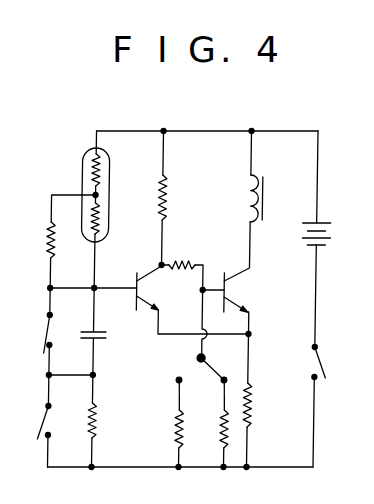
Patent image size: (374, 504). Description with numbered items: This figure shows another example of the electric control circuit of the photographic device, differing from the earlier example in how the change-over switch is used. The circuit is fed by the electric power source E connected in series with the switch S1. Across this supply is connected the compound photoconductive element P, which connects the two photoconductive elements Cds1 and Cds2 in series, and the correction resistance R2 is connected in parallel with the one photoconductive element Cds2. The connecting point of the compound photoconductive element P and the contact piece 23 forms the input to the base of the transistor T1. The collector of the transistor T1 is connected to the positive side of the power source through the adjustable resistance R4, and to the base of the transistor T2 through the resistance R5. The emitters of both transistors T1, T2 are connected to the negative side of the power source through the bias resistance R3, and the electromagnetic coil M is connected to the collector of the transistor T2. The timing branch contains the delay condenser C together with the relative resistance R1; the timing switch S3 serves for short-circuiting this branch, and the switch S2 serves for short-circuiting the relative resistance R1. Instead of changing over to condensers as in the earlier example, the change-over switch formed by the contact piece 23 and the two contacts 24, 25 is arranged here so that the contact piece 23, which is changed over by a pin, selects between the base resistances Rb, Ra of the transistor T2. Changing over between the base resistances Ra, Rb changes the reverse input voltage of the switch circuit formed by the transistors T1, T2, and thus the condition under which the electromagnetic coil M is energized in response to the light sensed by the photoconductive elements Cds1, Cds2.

The photoconductive element Cds1 is at (92, 157).
The photoconductive element Cds2 is at (91, 228).
The compound photoconductive element P is at (113, 154).
The relative resistance R1 is at (106, 421).
The correction resistance R2 is at (59, 243).
The bias resistance R3 is at (262, 400).
The adjustable resistance R4 is at (177, 199).
The resistance R5 is at (184, 298).
The base resistance Ra is at (209, 423).
The base resistance Rb is at (163, 423).
The delay condenser C is at (95, 333).
The transistor T1 is at (193, 300).
The transistor T2 is at (236, 279).
The switch S1 is at (331, 406).
The switch S2 is at (31, 421).
The timing switch S3 is at (34, 333).
The electromagnetic coil M is at (268, 176).
The electric power source E is at (324, 239).
The contact piece 23 is at (200, 366).
The contact 24 is at (161, 385).
The contact 25 is at (228, 367).